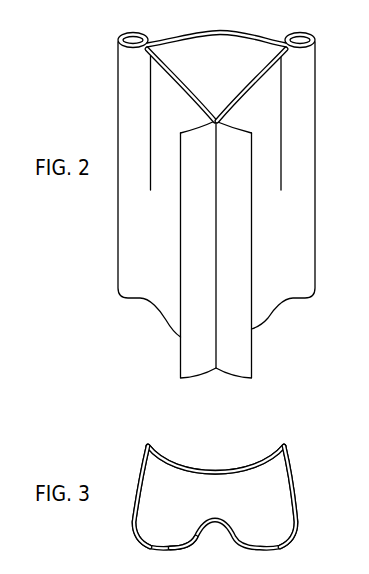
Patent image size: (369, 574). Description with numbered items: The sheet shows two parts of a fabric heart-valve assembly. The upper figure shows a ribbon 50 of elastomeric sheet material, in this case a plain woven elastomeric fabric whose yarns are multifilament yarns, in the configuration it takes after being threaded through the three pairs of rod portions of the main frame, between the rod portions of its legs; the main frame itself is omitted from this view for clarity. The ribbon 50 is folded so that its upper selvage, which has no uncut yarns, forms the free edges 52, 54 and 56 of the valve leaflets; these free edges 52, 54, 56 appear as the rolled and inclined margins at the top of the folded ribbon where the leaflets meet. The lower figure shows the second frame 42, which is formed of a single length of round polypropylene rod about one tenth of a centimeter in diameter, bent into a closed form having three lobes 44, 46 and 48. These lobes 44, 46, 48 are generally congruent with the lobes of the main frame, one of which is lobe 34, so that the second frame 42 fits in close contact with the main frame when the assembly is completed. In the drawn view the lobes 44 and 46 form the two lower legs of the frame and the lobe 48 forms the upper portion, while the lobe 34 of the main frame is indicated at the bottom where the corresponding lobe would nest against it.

In FIG. 2, the ribbon 50 is at (322, 140).
In FIG. 2, the free edge of valve leaflet 52 is at (221, 31).
In FIG. 2, the free edge of valve leaflet 54 is at (172, 81).
In FIG. 2, the free edge of valve leaflet 56 is at (247, 82).
In FIG. 3, the second frame 42 is at (208, 454).
In FIG. 3, the lobe 48 is at (238, 473).
In FIG. 3, the lobe 44 is at (145, 547).
In FIG. 3, the lobe 46 is at (276, 548).
In FIG. 3, the lobe 34 is at (221, 573).